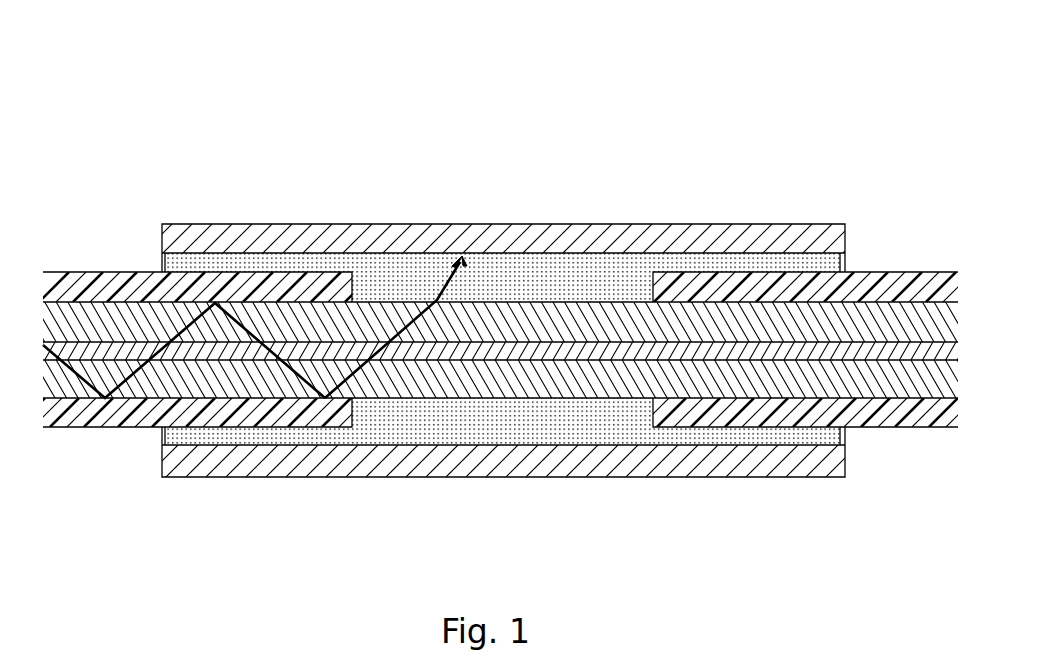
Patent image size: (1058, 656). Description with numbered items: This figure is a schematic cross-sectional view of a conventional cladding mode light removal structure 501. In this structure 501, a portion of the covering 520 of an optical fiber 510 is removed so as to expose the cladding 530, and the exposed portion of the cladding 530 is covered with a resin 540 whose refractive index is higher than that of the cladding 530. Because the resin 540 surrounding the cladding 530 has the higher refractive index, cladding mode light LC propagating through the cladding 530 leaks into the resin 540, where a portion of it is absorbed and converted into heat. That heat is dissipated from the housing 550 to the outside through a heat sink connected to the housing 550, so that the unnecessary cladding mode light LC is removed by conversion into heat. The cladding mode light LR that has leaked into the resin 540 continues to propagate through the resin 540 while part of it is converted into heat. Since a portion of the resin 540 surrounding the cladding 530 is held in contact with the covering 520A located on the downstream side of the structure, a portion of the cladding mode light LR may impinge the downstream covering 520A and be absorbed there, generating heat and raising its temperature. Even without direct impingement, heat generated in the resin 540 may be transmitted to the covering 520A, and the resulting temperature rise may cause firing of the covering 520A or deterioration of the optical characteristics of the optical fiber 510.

The cladding mode light removal structure 501 is at (503, 121).
The optical fiber 510 is at (103, 443).
The covering 520 is at (105, 272).
The covering 520A is at (673, 283).
The cladding 530 is at (622, 320).
The resin 540 is at (545, 252).
The housing 550 is at (273, 229).
The cladding mode light LC is at (410, 322).
The cladding mode light LR is at (435, 277).